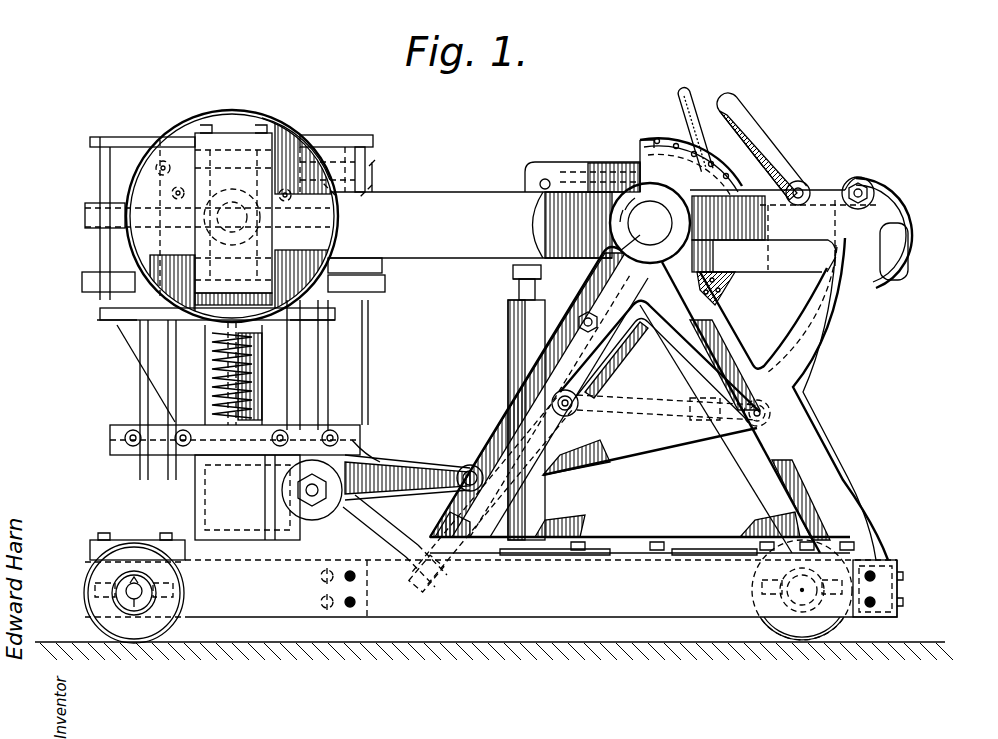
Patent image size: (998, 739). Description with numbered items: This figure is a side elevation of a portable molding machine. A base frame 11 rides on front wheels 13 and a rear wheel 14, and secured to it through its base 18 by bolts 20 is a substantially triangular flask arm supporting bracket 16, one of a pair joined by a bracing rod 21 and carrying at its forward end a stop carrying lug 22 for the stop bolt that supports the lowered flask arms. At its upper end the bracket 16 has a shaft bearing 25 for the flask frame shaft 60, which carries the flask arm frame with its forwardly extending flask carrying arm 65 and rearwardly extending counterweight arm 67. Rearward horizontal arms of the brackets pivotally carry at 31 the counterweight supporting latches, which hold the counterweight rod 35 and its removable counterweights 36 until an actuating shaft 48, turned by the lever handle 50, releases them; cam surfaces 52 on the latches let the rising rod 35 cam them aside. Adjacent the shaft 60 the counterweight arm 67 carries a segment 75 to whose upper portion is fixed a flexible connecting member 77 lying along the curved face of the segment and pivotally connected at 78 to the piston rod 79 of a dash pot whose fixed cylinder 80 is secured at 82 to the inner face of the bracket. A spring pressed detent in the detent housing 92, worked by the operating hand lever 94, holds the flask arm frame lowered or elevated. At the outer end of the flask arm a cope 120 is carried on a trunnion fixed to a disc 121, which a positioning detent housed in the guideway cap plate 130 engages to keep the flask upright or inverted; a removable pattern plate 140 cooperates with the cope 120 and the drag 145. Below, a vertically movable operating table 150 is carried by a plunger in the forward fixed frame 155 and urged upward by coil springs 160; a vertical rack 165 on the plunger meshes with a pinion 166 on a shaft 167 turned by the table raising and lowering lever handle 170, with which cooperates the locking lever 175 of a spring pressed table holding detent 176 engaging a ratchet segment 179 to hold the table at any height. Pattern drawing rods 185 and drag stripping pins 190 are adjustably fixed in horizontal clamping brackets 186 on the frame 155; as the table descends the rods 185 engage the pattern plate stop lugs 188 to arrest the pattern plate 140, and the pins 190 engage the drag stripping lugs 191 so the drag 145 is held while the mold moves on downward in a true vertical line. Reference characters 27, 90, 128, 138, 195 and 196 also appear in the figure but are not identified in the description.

The base frame 11 is at (588, 602).
The front wheels 13 is at (184, 626).
The rear wheel 14 is at (758, 626).
The flask arm supporting bracket 16 is at (495, 400).
The bases 18 is at (625, 523).
The bolts 20 is at (657, 542).
The bracing rod 21 is at (588, 327).
The stop carrying lug 22 is at (518, 346).
The flask arm supporting shaft bearing 25 is at (640, 262).
The adjusting nut 27 is at (512, 298).
The latch pivot 31 is at (868, 185).
The counterweight rod 35 is at (908, 233).
The removable counterweights 36 is at (905, 206).
The actuating shaft 48 is at (805, 188).
The actuating lever handle 50 is at (762, 150).
The cam surfaces 52 is at (768, 310).
The flask frame shaft 60 is at (617, 223).
The flask carrying arm 65 is at (445, 199).
The counterweight arm 67 is at (770, 262).
The segment 75 is at (667, 150).
The flexible connecting member 77 is at (715, 297).
The pivotal connection 78 is at (629, 360).
The piston rod 79 is at (630, 352).
The fixed cylinder 80 is at (412, 488).
The cylinder securing point 82 is at (580, 406).
The bracket 90 is at (525, 162).
The detent housing 92 is at (612, 160).
The operating hand lever 94 is at (698, 96).
The cope 120 is at (346, 143).
The disc 121 is at (150, 245).
The rim 128 is at (288, 125).
The guideway cap plate 130 is at (240, 128).
The bolt 138 is at (205, 172).
The removable pattern plate 140 is at (95, 213).
The drag 145 is at (95, 266).
The vertically movable operating table 150 is at (105, 312).
The forward fixed frame 155 is at (200, 509).
The coil springs 160 is at (212, 360).
The vertical rack 165 is at (300, 388).
The pinion 166 is at (360, 447).
The shaft 167 is at (268, 508).
The table raising and lowering lever handle 170 is at (688, 440).
The locking lever 175 is at (632, 455).
The spring pressed table holding detent 176 is at (345, 470).
The ratchet segment 179 is at (355, 440).
The pattern drawing rods 185 is at (175, 346).
The horizontal clamping brackets 186 is at (126, 428).
The pattern plate stop lugs 188 is at (372, 162).
The drag stripping pins 190 is at (145, 386).
The drag stripping lugs 191 is at (375, 185).
The bearing 195 is at (372, 270).
The block 196 is at (380, 289).